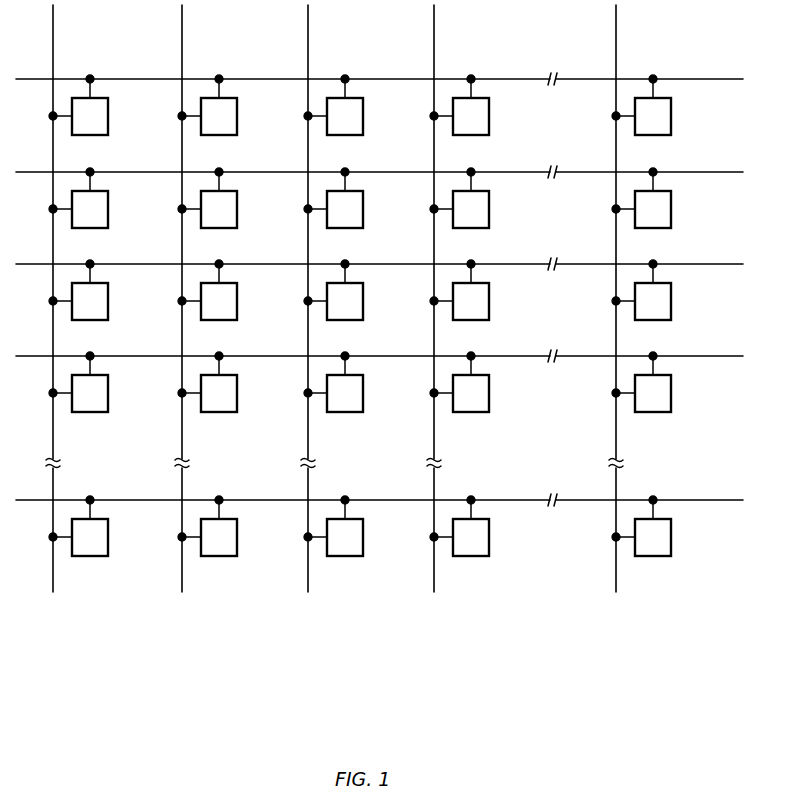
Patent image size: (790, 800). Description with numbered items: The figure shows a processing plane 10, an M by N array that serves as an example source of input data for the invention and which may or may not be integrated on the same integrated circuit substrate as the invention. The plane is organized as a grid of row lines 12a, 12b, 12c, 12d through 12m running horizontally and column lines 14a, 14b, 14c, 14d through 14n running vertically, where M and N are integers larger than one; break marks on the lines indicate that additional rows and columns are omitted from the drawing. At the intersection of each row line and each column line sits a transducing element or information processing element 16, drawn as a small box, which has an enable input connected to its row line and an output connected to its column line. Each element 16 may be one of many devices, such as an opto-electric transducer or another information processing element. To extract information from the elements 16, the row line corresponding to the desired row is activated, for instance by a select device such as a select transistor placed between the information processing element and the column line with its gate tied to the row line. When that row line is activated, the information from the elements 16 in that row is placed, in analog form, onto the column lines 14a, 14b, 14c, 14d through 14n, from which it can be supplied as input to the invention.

The processing plane 10 is at (379, 349).
The row line 12a is at (590, 79).
The row line 12b is at (590, 172).
The row line 12c is at (590, 264).
The row line 12d is at (590, 356).
The row line 12m is at (590, 500).
The column line 14a is at (53, 33).
The column line 14b is at (182, 33).
The column line 14c is at (308, 33).
The column line 14d is at (434, 33).
The column line 14n is at (616, 33).
The information processing element 16 is at (380, 327).